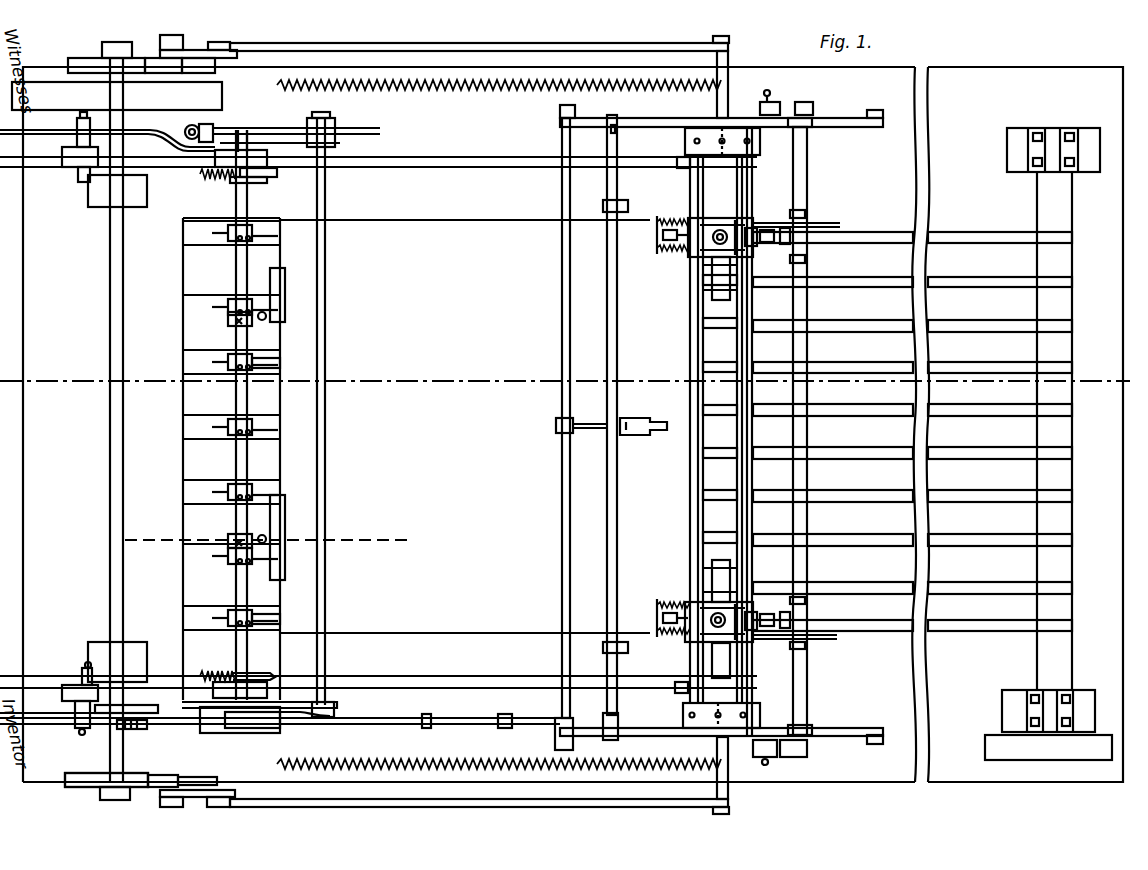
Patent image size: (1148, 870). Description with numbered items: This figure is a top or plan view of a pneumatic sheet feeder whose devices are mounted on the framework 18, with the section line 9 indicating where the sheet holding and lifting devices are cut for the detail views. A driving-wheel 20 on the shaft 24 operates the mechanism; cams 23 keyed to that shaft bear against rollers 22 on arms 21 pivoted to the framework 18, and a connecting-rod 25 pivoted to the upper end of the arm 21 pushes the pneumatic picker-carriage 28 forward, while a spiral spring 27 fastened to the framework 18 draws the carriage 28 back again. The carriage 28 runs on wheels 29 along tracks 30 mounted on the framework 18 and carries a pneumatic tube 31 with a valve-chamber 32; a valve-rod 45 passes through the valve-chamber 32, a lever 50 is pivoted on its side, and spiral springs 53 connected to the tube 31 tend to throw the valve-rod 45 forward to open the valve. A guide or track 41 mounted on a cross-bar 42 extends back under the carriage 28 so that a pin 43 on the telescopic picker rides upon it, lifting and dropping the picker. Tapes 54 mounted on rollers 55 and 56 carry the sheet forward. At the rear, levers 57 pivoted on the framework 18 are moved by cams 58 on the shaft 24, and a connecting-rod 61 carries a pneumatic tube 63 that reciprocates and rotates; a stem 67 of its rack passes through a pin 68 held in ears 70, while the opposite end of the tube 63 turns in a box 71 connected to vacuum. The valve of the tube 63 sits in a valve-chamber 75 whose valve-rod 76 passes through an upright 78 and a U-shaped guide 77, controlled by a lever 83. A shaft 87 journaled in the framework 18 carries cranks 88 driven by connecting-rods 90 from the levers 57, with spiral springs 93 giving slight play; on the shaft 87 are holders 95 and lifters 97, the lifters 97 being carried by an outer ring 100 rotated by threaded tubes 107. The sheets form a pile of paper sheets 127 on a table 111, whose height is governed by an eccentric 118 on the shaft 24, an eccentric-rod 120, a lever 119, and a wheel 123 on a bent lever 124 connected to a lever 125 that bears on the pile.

The section line 9 is at (565, 465).
The framework 18 is at (573, 420).
The driving-wheel 20 is at (117, 421).
The arms 21 is at (194, 48).
The rollers 22 is at (215, 66).
The cams 23 is at (135, 775).
The shaft 24 is at (110, 278).
The connecting-rod 25 is at (398, 45).
The spiral spring 27 is at (447, 90).
The pneumatic picker-carriage 28 is at (740, 275).
The wheels 29 is at (685, 130).
The tracks 30 is at (848, 120).
The pneumatic tube 31 is at (715, 250).
The valve-chamber 32 is at (708, 218).
The guide or track 41 is at (776, 210).
The cross-bar 42 is at (808, 195).
The pin 43 is at (712, 262).
The valve-rod 45 is at (680, 220).
The lever 50 is at (760, 228).
The spiral springs 53 is at (665, 251).
The tapes 54 is at (882, 232).
The roller 55 is at (716, 429).
The roller 56 is at (1048, 444).
The levers 57 is at (74, 150).
The cams 58 is at (143, 140).
The connecting-rod 61 is at (48, 705).
The pneumatic tube 63 is at (325, 425).
The stem 67 is at (283, 702).
The pin 68 is at (218, 704).
The ears 70 is at (240, 688).
The box 71 is at (330, 118).
The valve-chamber 75 is at (200, 125).
The valve-rod 76 is at (360, 134).
The U-shaped guide 77 is at (280, 148).
The upright 78 is at (270, 150).
The lever 83 is at (270, 128).
The shaft 87 is at (236, 393).
The cranks 88 is at (260, 182).
The connecting-rods 90 is at (275, 174).
The spiral springs 93 is at (213, 180).
The holders 95 is at (282, 318).
The lifters 97 is at (260, 295).
The outer ring 100 is at (236, 433).
The tubes 107 is at (234, 312).
The table 111 is at (195, 457).
The eccentric 118 is at (108, 740).
The lever 119 is at (226, 733).
The eccentric-rod 120 is at (170, 728).
The wheel 123 is at (640, 418).
The bent lever 124 is at (526, 726).
The lever 125 is at (280, 715).
The pile of paper sheets 127 is at (446, 296).